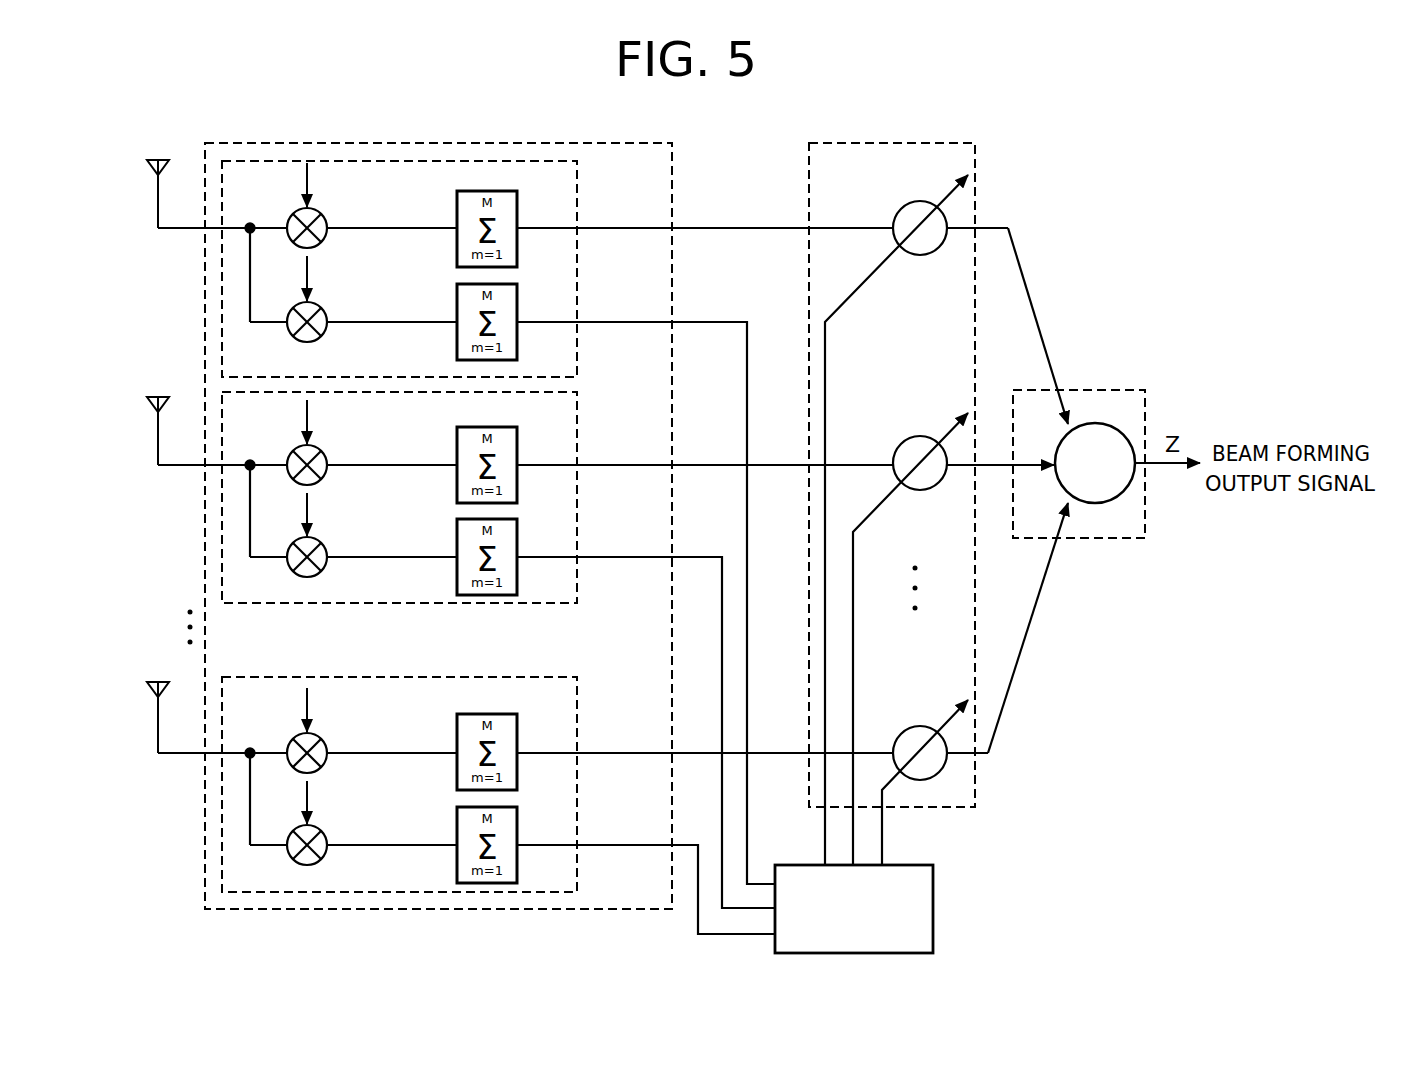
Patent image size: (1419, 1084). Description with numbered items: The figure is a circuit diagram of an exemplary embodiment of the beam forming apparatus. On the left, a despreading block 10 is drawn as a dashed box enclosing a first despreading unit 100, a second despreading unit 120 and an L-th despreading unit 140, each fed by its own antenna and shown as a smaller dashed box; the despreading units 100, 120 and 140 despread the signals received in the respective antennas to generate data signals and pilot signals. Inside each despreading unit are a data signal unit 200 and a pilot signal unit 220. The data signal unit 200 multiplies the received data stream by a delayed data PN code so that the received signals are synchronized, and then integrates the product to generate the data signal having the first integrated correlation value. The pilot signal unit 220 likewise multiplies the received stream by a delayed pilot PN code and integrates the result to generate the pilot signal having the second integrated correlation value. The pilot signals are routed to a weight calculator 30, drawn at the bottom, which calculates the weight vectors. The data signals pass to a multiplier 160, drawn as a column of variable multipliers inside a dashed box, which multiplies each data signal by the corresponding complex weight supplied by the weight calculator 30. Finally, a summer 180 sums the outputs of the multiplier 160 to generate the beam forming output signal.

The despreading block 10 is at (672, 163).
The first despreading unit 100 is at (403, 220).
The second despreading unit 120 is at (577, 492).
The L-th despreading unit 140 is at (577, 782).
The multiplier 160 is at (975, 158).
The summer 180 is at (1145, 397).
The weight calculator 30 is at (933, 888).
The data signal unit 200 is at (435, 186).
The pilot signal unit 220 is at (354, 337).